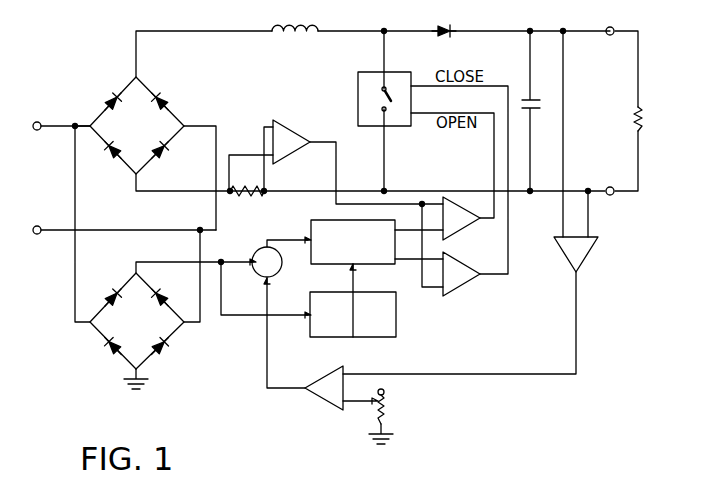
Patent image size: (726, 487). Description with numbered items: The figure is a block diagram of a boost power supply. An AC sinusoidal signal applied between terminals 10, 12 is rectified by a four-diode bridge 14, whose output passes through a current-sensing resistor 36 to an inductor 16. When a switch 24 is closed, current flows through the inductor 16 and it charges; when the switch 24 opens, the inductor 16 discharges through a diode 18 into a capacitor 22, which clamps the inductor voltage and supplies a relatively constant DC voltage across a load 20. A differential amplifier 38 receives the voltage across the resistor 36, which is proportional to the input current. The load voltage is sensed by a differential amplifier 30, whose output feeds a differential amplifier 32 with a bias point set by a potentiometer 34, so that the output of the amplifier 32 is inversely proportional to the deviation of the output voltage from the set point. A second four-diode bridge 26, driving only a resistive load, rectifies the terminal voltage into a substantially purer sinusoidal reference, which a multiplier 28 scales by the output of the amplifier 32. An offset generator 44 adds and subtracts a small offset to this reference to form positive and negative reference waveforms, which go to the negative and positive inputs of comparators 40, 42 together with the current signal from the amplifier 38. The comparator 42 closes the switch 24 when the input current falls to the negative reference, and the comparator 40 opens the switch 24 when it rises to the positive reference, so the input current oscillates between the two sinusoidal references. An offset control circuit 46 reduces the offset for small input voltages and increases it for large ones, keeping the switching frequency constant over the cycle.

The terminal 10 is at (37, 122).
The terminal 12 is at (37, 226).
The 4-diode bridge 14 is at (178, 92).
The inductor 16 is at (290, 37).
The diode 18 is at (441, 38).
The load 20 is at (641, 116).
The capacitor 22 is at (532, 100).
The switch 24 is at (358, 96).
The second 4-diode bridge 26 is at (106, 288).
The multiplier 28 is at (258, 276).
The differential amplifier 30 is at (590, 258).
The differential amplifier 32 is at (322, 398).
The potentiometer 34 is at (387, 420).
The current-sensing resistor 36 is at (237, 197).
The differential amplifier 38 is at (297, 125).
The comparator 40 is at (458, 232).
The comparator 42 is at (456, 256).
The offset generator 44 is at (311, 220).
The offset control circuit 46 is at (398, 320).